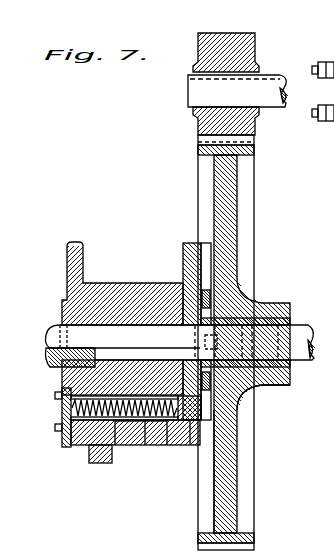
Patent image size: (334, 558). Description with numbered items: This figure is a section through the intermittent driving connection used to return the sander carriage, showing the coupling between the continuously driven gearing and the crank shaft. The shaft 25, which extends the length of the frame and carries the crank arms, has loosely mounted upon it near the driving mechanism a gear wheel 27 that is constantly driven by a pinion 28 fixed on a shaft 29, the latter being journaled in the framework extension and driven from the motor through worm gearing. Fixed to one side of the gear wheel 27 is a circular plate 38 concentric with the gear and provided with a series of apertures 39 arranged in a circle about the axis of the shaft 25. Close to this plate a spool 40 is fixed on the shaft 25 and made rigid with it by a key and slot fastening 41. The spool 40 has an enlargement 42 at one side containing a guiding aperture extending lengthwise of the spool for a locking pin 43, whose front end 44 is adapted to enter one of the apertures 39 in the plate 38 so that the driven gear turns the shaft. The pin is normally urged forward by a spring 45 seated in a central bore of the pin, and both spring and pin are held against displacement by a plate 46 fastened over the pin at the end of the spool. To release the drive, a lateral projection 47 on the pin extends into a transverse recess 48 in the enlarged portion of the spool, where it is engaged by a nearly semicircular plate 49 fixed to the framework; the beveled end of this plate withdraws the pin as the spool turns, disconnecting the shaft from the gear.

The shaft 25 is at (300, 354).
The gear wheel 27 is at (240, 197).
The pinion 28 is at (228, 44).
The shaft 29 is at (200, 92).
The circular plate 38 is at (238, 426).
The apertures 39 is at (205, 273).
The spool 40 is at (140, 283).
The key and slot fastening 41 is at (65, 342).
The enlargement 42 is at (132, 446).
The locking pin 43 is at (198, 422).
The front end 44 is at (215, 472).
The spring 45 is at (152, 446).
The plate 46 is at (58, 413).
The lateral projection 47 is at (76, 446).
The transverse recess 48 is at (117, 446).
The nearly semicircular plate 49 is at (100, 465).